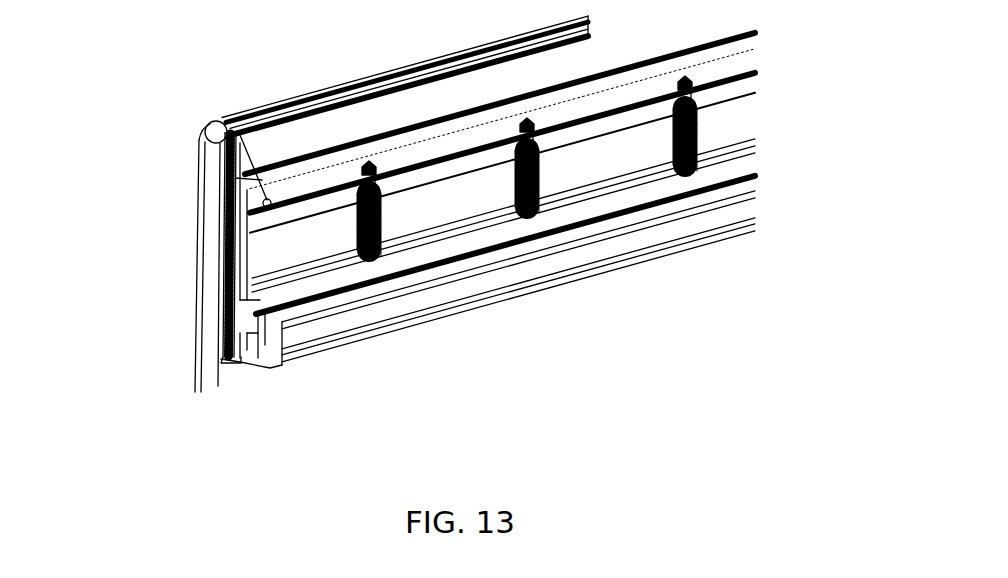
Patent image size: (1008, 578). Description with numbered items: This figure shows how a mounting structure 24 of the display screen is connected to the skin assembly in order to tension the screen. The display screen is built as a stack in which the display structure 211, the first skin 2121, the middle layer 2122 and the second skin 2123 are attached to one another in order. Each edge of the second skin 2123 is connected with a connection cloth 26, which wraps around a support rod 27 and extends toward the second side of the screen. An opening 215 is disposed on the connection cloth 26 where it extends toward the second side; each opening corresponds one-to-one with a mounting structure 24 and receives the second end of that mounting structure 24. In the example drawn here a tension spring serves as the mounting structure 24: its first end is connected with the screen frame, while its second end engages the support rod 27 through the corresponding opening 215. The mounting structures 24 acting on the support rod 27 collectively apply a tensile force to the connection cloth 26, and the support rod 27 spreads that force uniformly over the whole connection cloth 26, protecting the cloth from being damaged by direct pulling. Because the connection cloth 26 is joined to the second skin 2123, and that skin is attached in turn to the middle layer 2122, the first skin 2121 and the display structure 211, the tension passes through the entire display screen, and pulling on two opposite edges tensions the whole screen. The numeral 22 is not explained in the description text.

The display structure 211 is at (197, 305).
The first skin 2121 is at (203, 253).
The middle layer 2122 is at (220, 200).
The second skin 2123 is at (227, 173).
The opening 215 is at (707, 90).
The bottom rail 22 is at (340, 340).
The mounting structure 24 is at (380, 257).
The connection cloth 26 is at (277, 143).
The support rod 27 is at (265, 198).